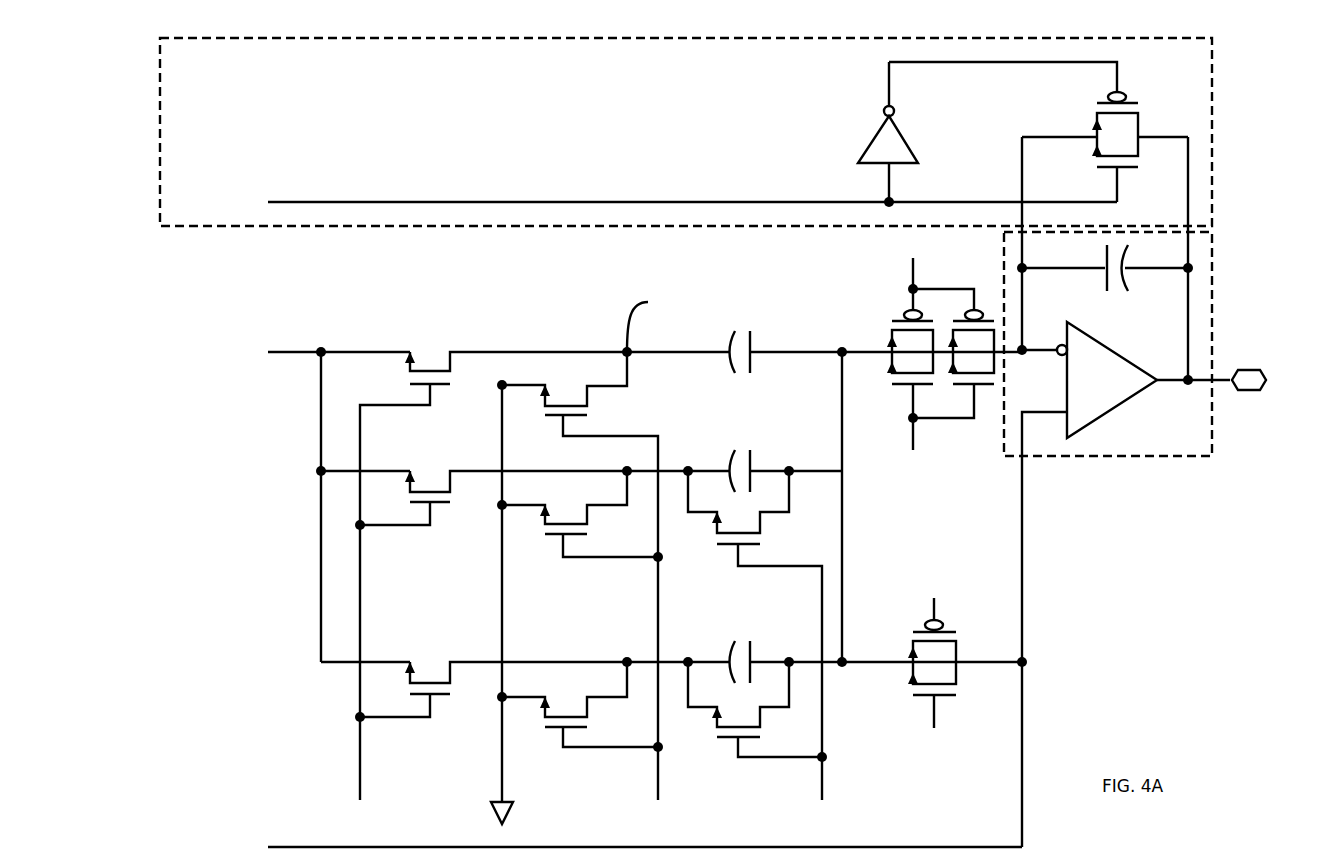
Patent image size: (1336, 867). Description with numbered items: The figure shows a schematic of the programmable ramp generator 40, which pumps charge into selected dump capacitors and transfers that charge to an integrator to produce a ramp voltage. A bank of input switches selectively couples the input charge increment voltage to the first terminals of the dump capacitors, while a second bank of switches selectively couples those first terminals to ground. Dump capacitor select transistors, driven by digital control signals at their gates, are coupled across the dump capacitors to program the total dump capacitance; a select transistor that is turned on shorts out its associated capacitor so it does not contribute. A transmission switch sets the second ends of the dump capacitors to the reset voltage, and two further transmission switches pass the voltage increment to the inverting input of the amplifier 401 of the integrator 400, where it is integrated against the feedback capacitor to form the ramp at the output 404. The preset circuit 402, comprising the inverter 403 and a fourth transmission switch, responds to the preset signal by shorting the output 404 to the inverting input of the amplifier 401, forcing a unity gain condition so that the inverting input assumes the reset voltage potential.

The programmable ramp generator 40 is at (742, 25).
The preset circuit 402 is at (337, 114).
The inverter 403 is at (912, 152).
The integrator 400 is at (1202, 438).
The amplifier 401 is at (1120, 357).
The output 404 is at (1250, 390).